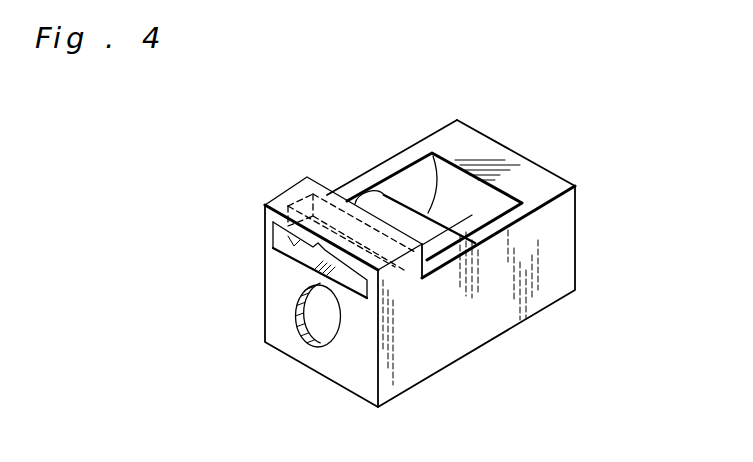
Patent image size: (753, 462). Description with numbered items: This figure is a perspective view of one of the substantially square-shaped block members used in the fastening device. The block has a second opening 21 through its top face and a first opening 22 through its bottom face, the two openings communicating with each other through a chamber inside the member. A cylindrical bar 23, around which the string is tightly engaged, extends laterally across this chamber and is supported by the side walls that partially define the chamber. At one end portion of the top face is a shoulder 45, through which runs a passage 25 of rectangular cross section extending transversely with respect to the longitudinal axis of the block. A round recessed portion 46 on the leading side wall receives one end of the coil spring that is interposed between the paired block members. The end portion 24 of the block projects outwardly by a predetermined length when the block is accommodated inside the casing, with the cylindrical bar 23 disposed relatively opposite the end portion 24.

The second opening 21 is at (411, 188).
The first opening 22 is at (458, 232).
The cylindrical bar 23 is at (437, 236).
The end portion 24 is at (578, 216).
The passage 25 is at (271, 230).
The shoulder 45 is at (268, 206).
The round recessed portion 46 is at (318, 322).